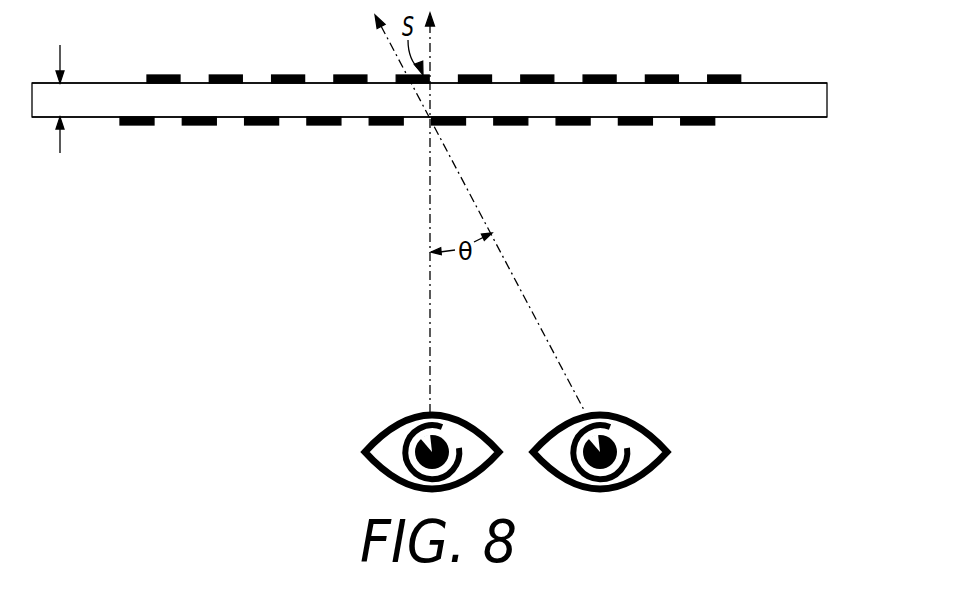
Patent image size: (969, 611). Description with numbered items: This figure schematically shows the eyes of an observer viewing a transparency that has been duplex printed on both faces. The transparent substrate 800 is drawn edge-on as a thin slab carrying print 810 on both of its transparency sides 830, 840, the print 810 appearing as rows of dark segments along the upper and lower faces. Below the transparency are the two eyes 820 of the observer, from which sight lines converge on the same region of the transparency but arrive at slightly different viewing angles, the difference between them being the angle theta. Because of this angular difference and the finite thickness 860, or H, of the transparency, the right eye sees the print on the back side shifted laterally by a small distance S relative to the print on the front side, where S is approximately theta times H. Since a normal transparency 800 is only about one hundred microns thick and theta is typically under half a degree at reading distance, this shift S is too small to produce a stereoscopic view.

The transparent substrate 800 is at (827, 100).
The print 810 is at (747, 69).
The eyes 820 is at (602, 380).
The transparency side 830 is at (795, 78).
The transparency side 840 is at (795, 122).
The thickness of the transparency 860 is at (63, 62).